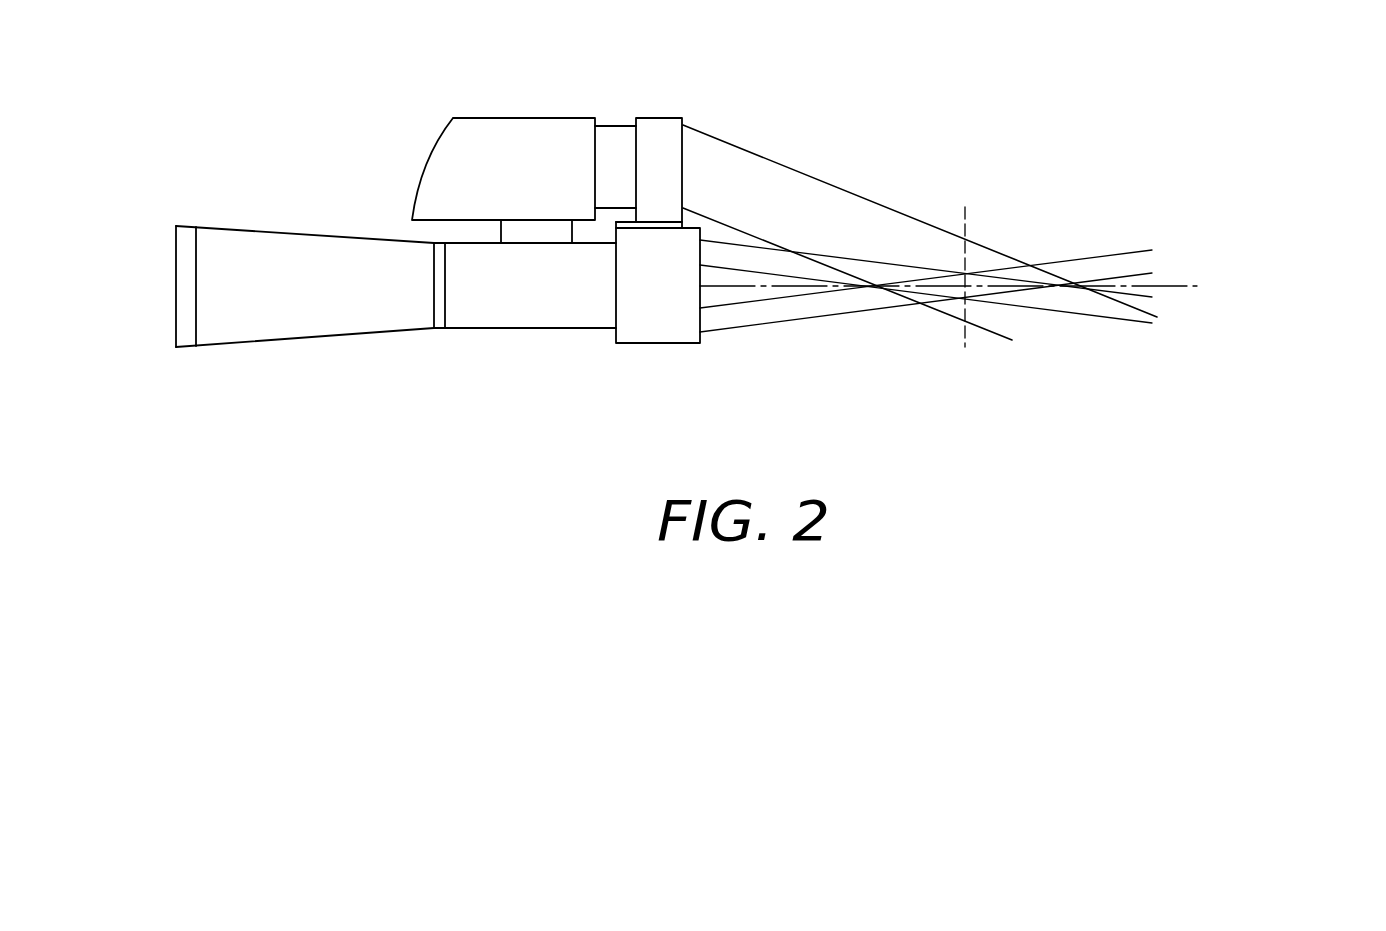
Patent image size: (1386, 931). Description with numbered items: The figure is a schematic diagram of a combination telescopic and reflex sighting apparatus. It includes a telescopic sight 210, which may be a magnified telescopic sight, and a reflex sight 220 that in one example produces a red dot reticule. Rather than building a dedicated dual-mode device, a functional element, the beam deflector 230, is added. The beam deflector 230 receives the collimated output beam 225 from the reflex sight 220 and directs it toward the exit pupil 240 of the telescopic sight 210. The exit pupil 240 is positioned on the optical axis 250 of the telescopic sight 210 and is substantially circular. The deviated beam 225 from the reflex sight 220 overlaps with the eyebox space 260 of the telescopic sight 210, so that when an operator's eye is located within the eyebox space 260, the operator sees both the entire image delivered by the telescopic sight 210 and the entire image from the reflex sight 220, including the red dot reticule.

The telescopic sight 210 is at (306, 338).
The reflex sight 220 is at (532, 117).
The collimated output beam 225 is at (818, 180).
The beam deflector 230 is at (677, 118).
The exit pupil 240 is at (967, 285).
The optical axis 250 is at (1175, 285).
The eyebox space 260 is at (945, 322).